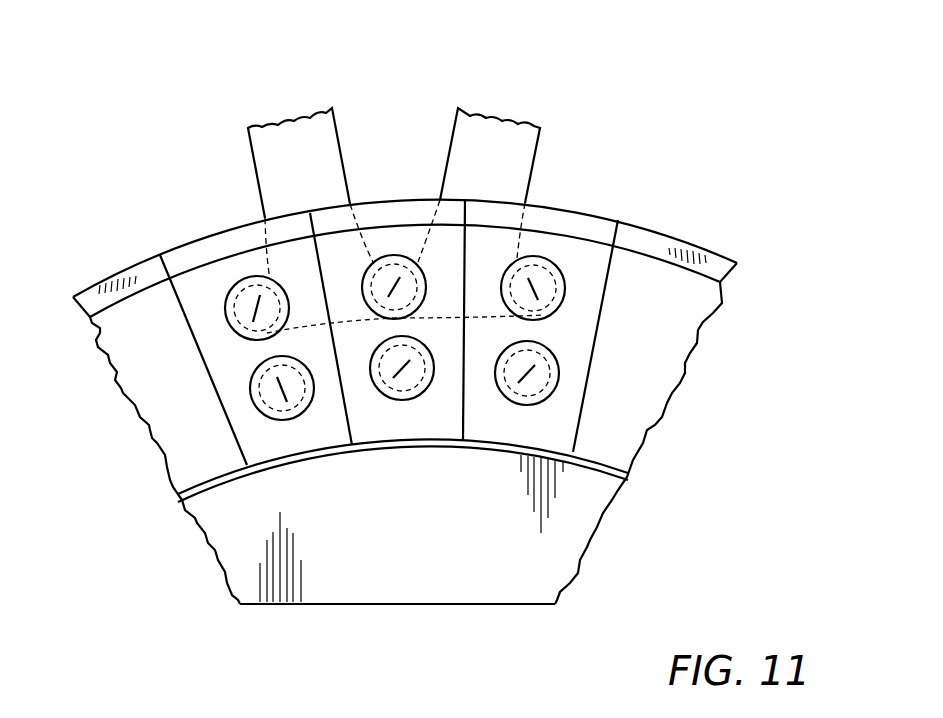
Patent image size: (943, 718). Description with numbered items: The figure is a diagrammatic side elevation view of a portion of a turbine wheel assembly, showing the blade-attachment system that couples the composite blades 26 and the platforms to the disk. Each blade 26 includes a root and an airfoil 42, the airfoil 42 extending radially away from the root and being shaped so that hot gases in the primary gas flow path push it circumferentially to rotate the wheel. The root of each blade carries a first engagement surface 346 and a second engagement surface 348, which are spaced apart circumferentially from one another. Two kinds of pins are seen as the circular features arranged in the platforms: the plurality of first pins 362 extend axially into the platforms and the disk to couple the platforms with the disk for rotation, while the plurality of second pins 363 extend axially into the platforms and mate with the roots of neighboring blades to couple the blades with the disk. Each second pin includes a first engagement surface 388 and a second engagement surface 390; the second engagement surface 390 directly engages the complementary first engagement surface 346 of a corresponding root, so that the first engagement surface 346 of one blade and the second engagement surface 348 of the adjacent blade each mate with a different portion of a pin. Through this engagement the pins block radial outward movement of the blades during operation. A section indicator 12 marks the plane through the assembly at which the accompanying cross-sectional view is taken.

The section line 12 is at (358, 627).
The composite blade 26 is at (565, 135).
The airfoil 42 is at (333, 112).
The first engagement surface 346 is at (404, 262).
The second engagement surface 348 is at (385, 262).
The first pin 362 is at (250, 390).
The second pin 363 is at (225, 308).
The first engagement surface 388 is at (547, 258).
The second engagement surface 390 is at (363, 292).